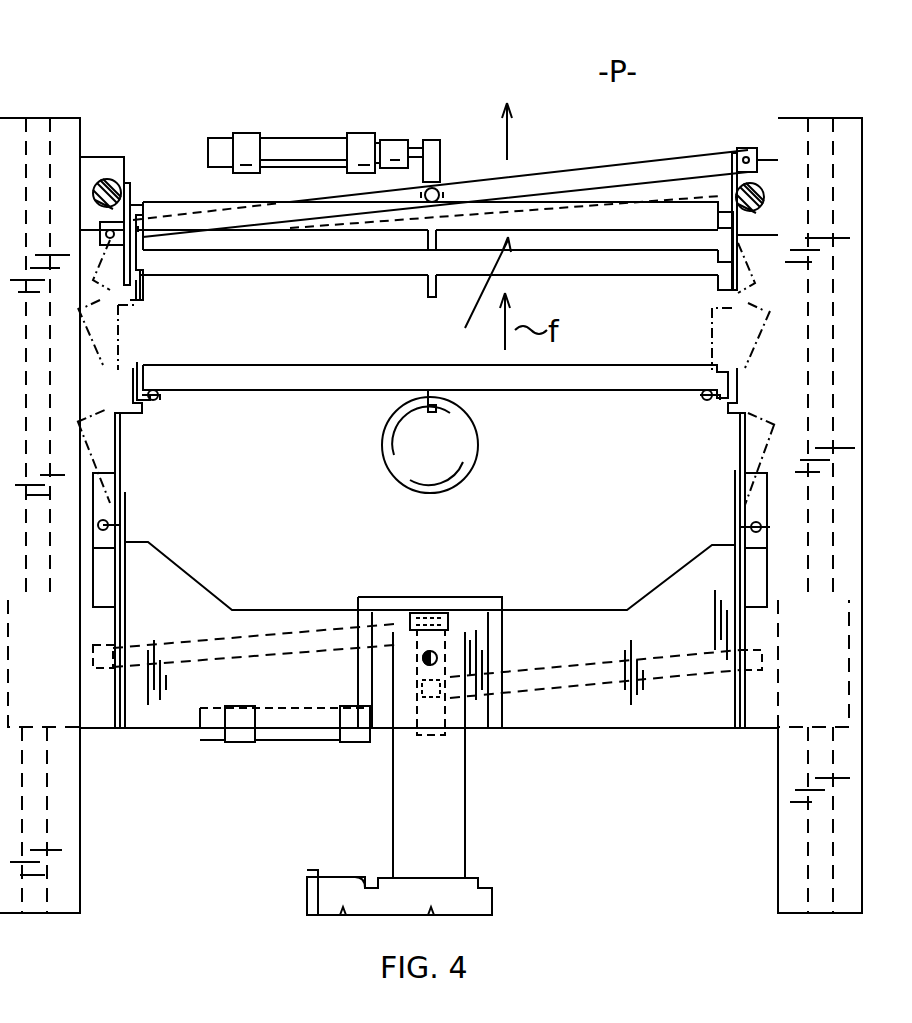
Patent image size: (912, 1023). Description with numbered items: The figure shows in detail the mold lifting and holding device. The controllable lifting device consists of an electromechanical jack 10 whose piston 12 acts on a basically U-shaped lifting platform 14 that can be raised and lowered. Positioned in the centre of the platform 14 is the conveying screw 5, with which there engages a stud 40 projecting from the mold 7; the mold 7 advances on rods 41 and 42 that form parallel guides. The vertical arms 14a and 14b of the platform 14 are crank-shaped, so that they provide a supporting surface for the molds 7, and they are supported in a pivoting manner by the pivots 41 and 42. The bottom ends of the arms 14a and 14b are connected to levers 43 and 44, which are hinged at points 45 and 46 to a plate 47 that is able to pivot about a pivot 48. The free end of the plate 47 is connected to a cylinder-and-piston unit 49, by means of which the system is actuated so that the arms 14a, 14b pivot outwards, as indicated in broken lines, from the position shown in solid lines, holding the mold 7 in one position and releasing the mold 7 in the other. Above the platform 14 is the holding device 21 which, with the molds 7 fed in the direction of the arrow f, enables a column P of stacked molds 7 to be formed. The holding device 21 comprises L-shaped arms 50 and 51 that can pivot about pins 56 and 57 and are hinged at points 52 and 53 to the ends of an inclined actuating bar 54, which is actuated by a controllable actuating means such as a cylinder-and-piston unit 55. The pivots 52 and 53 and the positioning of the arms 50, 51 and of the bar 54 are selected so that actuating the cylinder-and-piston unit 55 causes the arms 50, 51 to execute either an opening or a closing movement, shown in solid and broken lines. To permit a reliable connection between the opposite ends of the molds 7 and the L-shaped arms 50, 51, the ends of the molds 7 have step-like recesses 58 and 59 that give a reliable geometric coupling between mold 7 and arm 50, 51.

The conveying screw 5 is at (470, 455).
The mold 7 is at (345, 265).
The electromechanical jack 10 is at (485, 900).
The piston 12 is at (405, 833).
The lifting platform 14 is at (600, 710).
The vertical arm 14a is at (430, 594).
The vertical arm 14b is at (687, 594).
The holding device 21 is at (472, 294).
The stud 40 is at (420, 405).
The rod 41 is at (165, 400).
The rod 42 is at (700, 400).
The lever 43 is at (245, 630).
The lever 44 is at (595, 640).
The hinge point 45 is at (425, 612).
The hinge point 46 is at (450, 730).
The plate 47 is at (388, 605).
The pivot 48 is at (440, 657).
The cylinder-and-piston unit 49 is at (270, 745).
The L-shaped arm 50 is at (130, 228).
The L-shaped arm 51 is at (738, 200).
The hinge point 52 is at (72, 120).
The hinge point 53 is at (758, 150).
The inclined actuating bar 54 is at (472, 197).
The cylinder-and-piston unit 55 is at (300, 137).
The pin 56 is at (107, 172).
The pin 57 is at (731, 150).
The step-like recess 58 is at (735, 395).
The step-like recess 59 is at (135, 400).